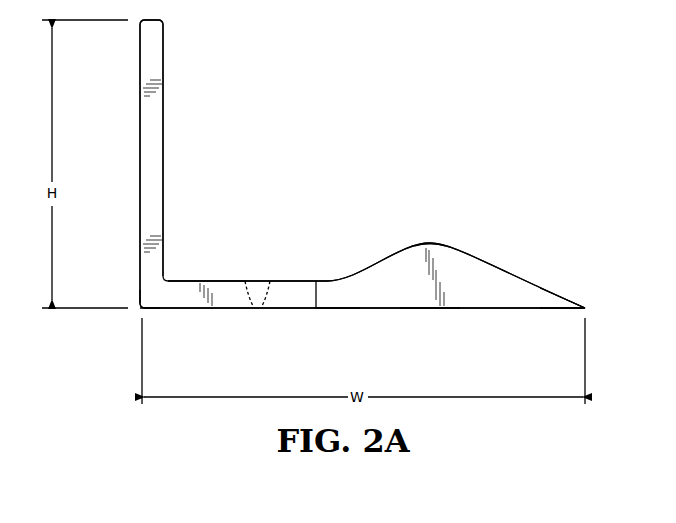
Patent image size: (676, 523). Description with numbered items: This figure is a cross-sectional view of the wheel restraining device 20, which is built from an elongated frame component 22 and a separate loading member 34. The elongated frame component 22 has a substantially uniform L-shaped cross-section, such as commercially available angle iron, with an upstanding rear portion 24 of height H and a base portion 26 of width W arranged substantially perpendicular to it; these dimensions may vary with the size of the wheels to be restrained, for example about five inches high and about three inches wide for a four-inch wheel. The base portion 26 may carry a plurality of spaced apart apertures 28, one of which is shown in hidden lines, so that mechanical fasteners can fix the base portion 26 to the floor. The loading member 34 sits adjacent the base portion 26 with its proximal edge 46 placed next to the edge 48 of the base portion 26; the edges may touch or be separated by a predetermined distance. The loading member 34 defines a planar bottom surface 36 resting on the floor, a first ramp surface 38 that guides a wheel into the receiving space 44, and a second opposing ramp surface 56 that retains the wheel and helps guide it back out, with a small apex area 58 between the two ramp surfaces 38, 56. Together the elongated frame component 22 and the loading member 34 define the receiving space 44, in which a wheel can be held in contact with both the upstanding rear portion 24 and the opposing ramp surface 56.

The restraining device 20 is at (500, 118).
The elongated frame component 22 is at (131, 290).
The upstanding rear portion 24 is at (140, 118).
The base portion 26 is at (237, 310).
The apertures 28 is at (265, 283).
The loading member 34 is at (566, 281).
The planar bottom surface 36 is at (430, 310).
The first ramp surface 38 is at (485, 265).
The receiving space 44 is at (241, 238).
The proximal edge 46 is at (333, 310).
The edge of the base portion 48 is at (311, 310).
The second opposing ramp surface 56 is at (380, 265).
The apex area 58 is at (430, 243).